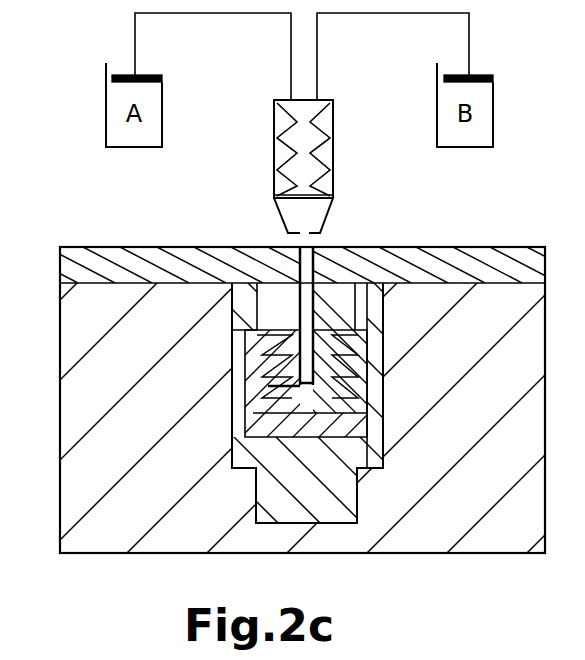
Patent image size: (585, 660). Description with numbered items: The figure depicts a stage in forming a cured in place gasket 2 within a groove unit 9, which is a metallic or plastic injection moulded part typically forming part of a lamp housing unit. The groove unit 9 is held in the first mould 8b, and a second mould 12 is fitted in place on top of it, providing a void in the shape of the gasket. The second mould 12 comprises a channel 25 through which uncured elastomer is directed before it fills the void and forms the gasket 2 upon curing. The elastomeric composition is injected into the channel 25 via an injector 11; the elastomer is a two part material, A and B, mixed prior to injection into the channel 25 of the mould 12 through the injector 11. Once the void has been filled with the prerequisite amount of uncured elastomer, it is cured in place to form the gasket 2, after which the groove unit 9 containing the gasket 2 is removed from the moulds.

The cured in place gasket 2 is at (253, 403).
The first mould 8b is at (116, 377).
The groove unit 9 is at (330, 505).
The injector 11 is at (327, 150).
The second mould 12 is at (467, 265).
The channel 25 is at (305, 312).